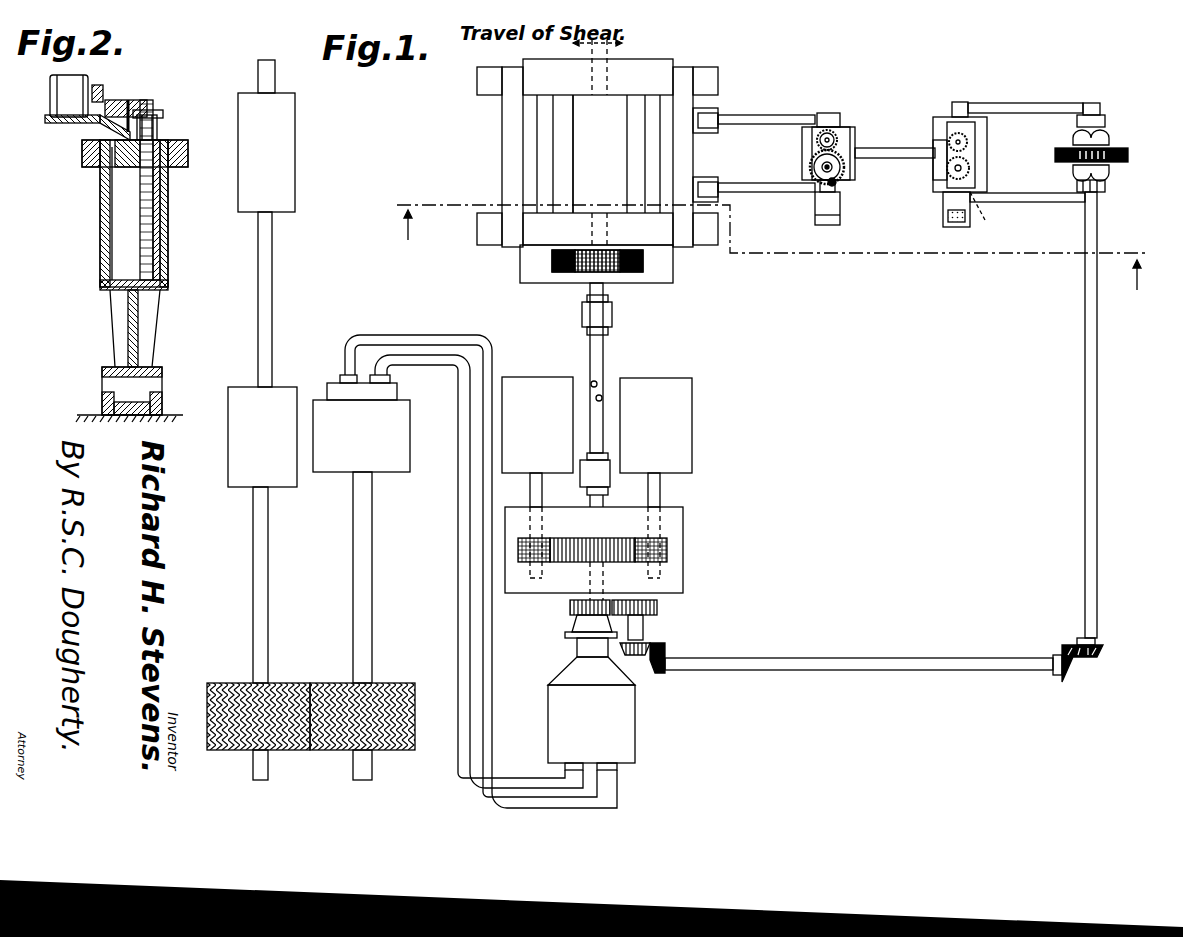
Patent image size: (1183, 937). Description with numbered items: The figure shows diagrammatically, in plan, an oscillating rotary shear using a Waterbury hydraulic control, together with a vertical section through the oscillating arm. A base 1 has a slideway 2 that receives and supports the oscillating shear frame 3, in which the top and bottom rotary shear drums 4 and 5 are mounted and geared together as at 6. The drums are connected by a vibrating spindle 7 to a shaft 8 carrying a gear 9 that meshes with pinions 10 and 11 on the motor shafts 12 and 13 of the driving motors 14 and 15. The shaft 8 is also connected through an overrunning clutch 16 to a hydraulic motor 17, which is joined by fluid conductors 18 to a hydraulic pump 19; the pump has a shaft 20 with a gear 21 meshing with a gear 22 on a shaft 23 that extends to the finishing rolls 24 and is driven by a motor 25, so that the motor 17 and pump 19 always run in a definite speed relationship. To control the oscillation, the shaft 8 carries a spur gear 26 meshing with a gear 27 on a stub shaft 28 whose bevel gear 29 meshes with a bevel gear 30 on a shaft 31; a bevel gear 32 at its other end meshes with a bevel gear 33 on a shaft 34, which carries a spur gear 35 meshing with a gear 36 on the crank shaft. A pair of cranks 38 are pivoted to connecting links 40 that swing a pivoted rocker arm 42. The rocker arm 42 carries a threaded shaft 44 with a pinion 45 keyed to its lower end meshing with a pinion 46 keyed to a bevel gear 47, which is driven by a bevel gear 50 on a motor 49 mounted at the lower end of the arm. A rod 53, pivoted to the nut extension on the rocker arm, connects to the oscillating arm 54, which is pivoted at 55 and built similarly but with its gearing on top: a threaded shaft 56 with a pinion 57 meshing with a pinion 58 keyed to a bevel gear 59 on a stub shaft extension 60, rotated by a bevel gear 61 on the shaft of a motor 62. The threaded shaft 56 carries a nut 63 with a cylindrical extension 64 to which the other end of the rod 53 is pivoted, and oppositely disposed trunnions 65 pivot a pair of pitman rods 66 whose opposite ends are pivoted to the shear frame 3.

In FIG. 1, the base 1 is at (478, 218).
In FIG. 1, the slideway 2 is at (478, 82).
In FIG. 1, the oscillating shear frame 3 is at (660, 65).
In FIG. 1, the top rotary shear drum 4 is at (580, 192).
In FIG. 1, the bottom rotary shear drum 5 is at (560, 145).
In FIG. 1, the gearing 6 is at (628, 273).
In FIG. 1, the vibrating spindle 7 is at (603, 360).
In FIG. 1, the shaft 8 is at (600, 497).
In FIG. 1, the gear 9 is at (578, 543).
In FIG. 1, the pinion 10 is at (537, 537).
In FIG. 1, the pinion 11 is at (667, 549).
In FIG. 1, the motor shaft 12 is at (537, 482).
In FIG. 1, the motor shaft 13 is at (660, 490).
In FIG. 1, the driving motor 14 is at (540, 375).
In FIG. 1, the driving motor 15 is at (683, 418).
In FIG. 1, the overrunning clutch 16 is at (577, 648).
In FIG. 1, the hydraulic motor 17 is at (558, 722).
In FIG. 1, the fluid conductors 18 is at (478, 594).
In FIG. 1, the hydraulic pump 19 is at (395, 462).
In FIG. 1, the pump shaft 20 is at (365, 572).
In FIG. 1, the gear 21 is at (400, 683).
In FIG. 1, the gear 22 is at (224, 683).
In FIG. 1, the shaft 23 is at (268, 307).
In FIG. 1, the finishing rolls 24 is at (290, 163).
In FIG. 1, the motor 25 is at (285, 395).
In FIG. 1, the spur gear 26 is at (572, 606).
In FIG. 1, the gear 27 is at (658, 607).
In FIG. 1, the stub shaft 28 is at (643, 628).
In FIG. 1, the bevel gear 29 is at (618, 650).
In FIG. 1, the bevel gear 30 is at (650, 662).
In FIG. 1, the shaft 31 is at (872, 670).
In FIG. 1, the bevel gear 32 is at (1070, 682).
In FIG. 1, the bevel gear 33 is at (1098, 657).
In FIG. 1, the shaft 34 is at (1086, 402).
In FIG. 1, the spur gear 35 is at (1108, 150).
In FIG. 1, the gear 36 is at (1110, 160).
In FIG. 1, the cranks 38 is at (1105, 120).
In FIG. 1, the connecting links 40 is at (1032, 107).
In FIG. 1, the rocker arm 42 is at (947, 122).
In FIG. 1, the threaded shaft 44 is at (987, 135).
In FIG. 1, the pinion 45 is at (988, 148).
In FIG. 1, the pinion 46 is at (940, 170).
In FIG. 1, the bevel gear 47 is at (985, 170).
In FIG. 1, the motor 49 is at (975, 222).
In FIG. 1, the bevel gear 50 is at (943, 195).
In FIG. 1, the rod 53 is at (895, 150).
In FIG. 2, the oscillating arm 54 is at (107, 230).
In FIG. 1, the oscillating arm 54 is at (812, 150).
In FIG. 2, the pivot 55 is at (103, 382).
In FIG. 2, the threaded shaft 56 is at (153, 232).
In FIG. 1, the threaded shaft 56 is at (818, 140).
In FIG. 2, the pinion 57 is at (158, 127).
In FIG. 1, the pinion 57 is at (836, 133).
In FIG. 2, the pinion 58 is at (108, 121).
In FIG. 2, the bevel gear 59 is at (145, 104).
In FIG. 1, the bevel gear 59 is at (810, 168).
In FIG. 2, the stub shaft extension 60 is at (128, 93).
In FIG. 1, the stub shaft extension 60 is at (845, 168).
In FIG. 2, the bevel gear 61 is at (98, 88).
In FIG. 1, the bevel gear 61 is at (836, 184).
In FIG. 2, the motor 62 is at (62, 92).
In FIG. 1, the motor 62 is at (815, 208).
In FIG. 2, the nut 63 is at (125, 180).
In FIG. 2, the cylindrical extension 64 is at (110, 170).
In FIG. 2, the trunnions 65 is at (187, 150).
In FIG. 2, the pitman rods 66 is at (100, 157).
In FIG. 1, the pitman rods 66 is at (788, 107).